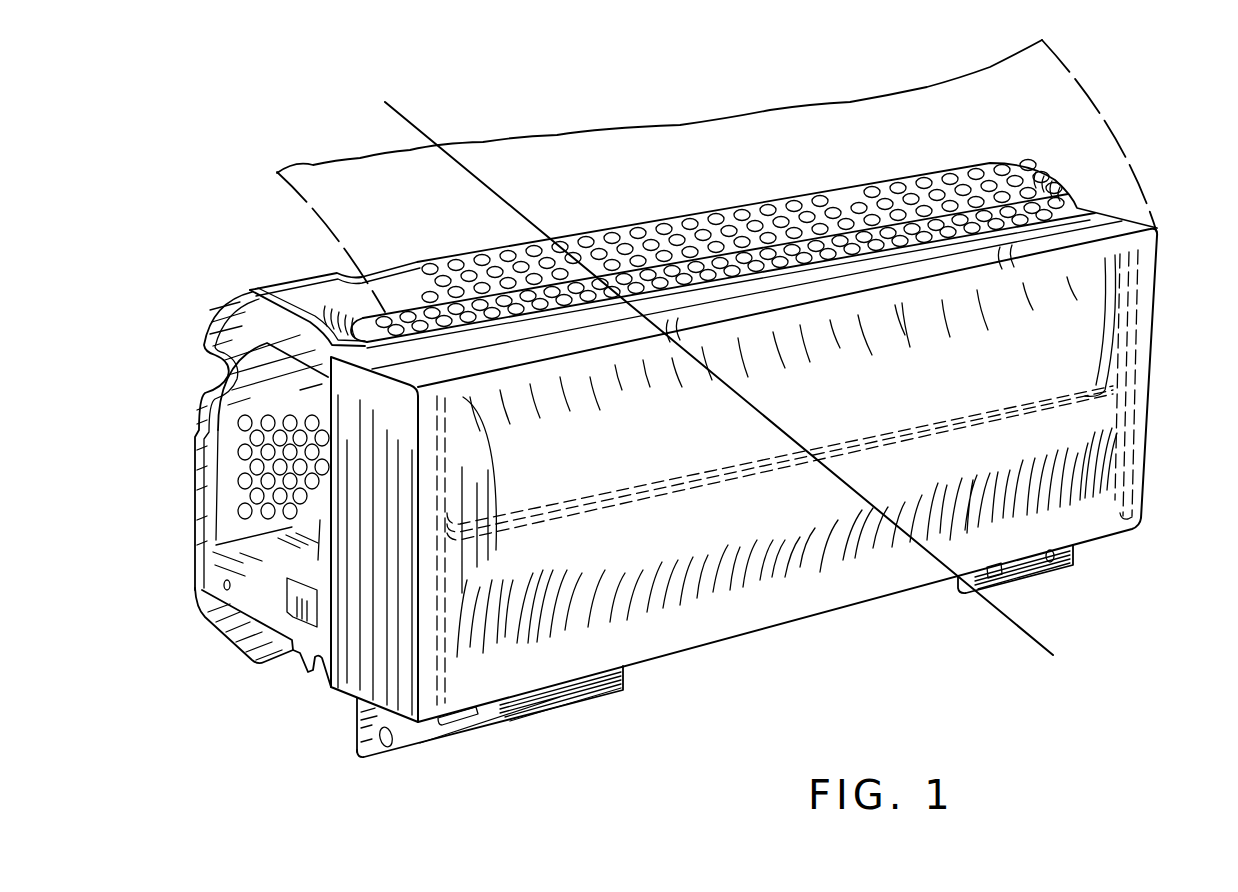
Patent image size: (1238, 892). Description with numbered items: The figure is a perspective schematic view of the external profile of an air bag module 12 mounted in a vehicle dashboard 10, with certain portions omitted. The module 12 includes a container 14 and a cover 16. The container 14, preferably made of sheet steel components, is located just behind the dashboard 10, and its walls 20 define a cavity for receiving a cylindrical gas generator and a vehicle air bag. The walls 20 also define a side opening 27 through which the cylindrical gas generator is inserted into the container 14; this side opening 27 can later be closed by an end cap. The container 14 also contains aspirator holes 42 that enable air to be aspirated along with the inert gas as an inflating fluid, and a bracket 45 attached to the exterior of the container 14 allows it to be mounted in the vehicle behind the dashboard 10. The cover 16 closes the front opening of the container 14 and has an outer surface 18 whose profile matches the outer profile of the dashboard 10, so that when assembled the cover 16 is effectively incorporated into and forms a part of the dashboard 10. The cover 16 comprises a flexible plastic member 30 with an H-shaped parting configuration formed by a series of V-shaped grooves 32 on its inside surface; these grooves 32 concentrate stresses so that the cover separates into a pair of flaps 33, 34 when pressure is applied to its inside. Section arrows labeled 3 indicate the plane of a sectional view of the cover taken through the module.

The vehicle dashboard 10 is at (1048, 128).
The air bag module 12 is at (617, 712).
The container 14 is at (289, 660).
The cover 16 is at (800, 620).
The outer surface 18 is at (714, 608).
The walls 20 is at (263, 565).
The side opening 27 is at (245, 477).
The flexible plastic member 30 is at (1150, 462).
The grooves 32 is at (1137, 311).
The flap 33 is at (878, 558).
The flap 34 is at (1062, 333).
The aspirator holes 42 is at (245, 423).
The bracket 45 is at (355, 718).
The section line 3- 3 is at (385, 102).